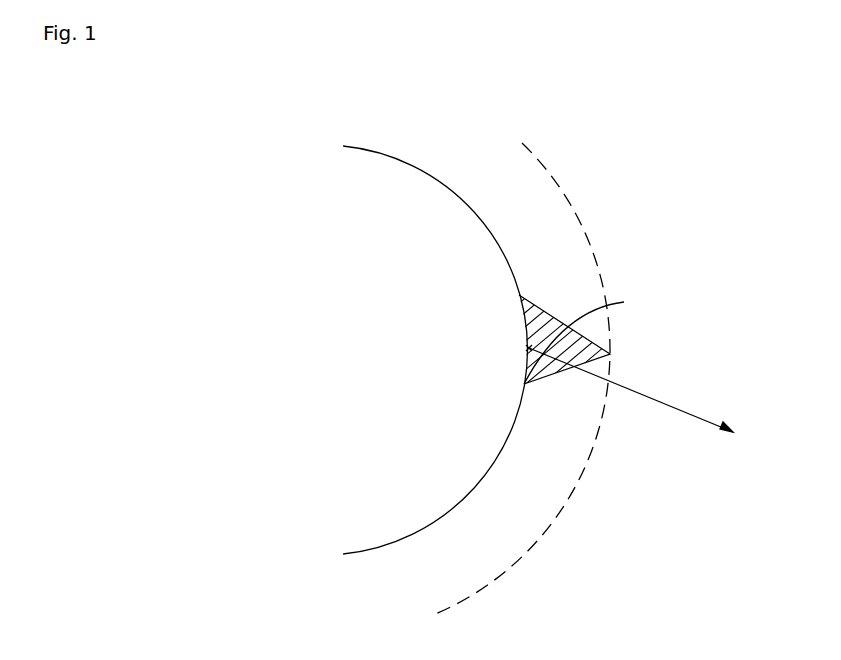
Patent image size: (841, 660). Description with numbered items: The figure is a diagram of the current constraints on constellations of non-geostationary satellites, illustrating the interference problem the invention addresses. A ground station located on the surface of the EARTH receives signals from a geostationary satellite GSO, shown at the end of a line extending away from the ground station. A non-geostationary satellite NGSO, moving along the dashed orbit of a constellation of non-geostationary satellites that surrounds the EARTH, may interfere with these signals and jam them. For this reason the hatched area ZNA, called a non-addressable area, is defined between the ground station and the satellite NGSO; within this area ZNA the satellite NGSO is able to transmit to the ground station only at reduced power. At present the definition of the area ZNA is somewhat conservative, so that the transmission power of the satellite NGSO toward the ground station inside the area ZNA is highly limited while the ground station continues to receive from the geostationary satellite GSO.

The Earth EARTH is at (411, 350).
The non-geostationary satellite NGSO is at (607, 352).
The non-addressable area ZNA is at (599, 337).
The geostationary satellite GSO is at (743, 437).